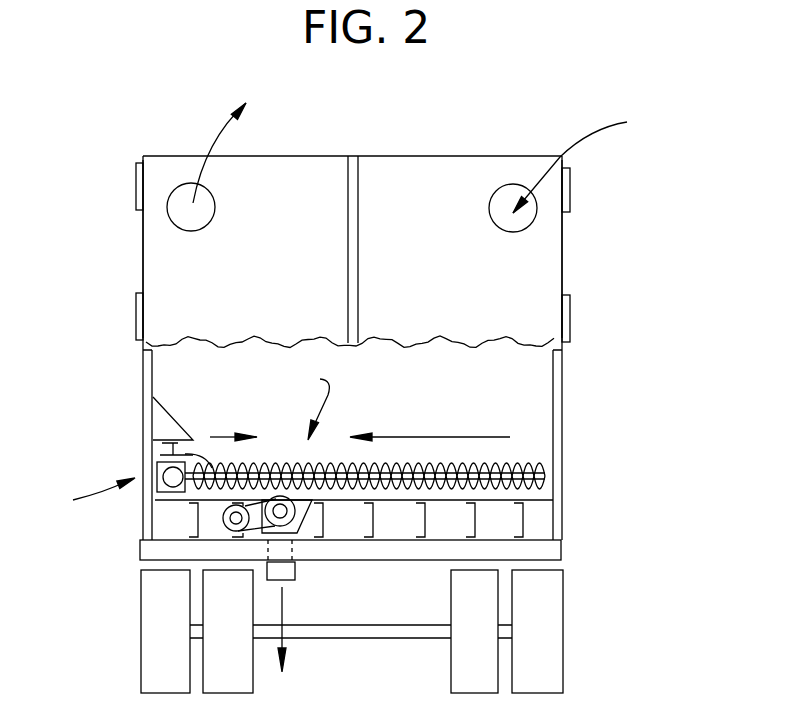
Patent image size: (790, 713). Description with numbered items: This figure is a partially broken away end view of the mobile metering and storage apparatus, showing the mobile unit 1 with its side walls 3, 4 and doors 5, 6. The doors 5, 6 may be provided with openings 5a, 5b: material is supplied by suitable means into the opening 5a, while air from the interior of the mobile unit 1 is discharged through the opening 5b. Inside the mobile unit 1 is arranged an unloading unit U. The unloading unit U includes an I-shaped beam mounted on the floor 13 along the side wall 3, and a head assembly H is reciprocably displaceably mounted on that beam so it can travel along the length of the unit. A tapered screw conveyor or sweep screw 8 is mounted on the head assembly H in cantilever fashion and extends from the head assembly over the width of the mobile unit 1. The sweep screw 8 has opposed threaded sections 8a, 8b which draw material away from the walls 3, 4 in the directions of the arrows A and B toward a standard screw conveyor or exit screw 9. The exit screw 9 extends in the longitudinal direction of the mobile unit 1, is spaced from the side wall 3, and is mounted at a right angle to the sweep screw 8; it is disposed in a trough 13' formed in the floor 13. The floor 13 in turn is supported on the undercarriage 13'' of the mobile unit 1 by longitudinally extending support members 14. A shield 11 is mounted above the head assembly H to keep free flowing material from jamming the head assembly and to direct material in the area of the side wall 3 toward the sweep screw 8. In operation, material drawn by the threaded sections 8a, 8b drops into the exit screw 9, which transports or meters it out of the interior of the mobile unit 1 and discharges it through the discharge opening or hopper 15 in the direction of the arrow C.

The mobile unit 1 is at (388, 138).
The side wall 3 is at (142, 233).
The side wall 4 is at (565, 268).
The door 5 is at (528, 257).
The opening 5a is at (512, 195).
The opening 5b is at (183, 190).
The door 6 is at (162, 268).
The tapered screw conveyor or sweep screw 8 is at (526, 472).
The threaded section 8a is at (160, 458).
The threaded section 8b is at (470, 470).
The screw conveyor or exit screw 9 is at (277, 497).
The shield 11 is at (180, 420).
The floor portion 13 is at (430, 505).
The trough 13' is at (321, 549).
The undercarriage 13'' is at (351, 616).
The support members 14 is at (525, 519).
The discharge opening or hopper 15 is at (296, 573).
The arrow A is at (228, 433).
The arrow B is at (438, 434).
The arrow C is at (288, 632).
The head assembly H is at (95, 497).
The unloading unit U is at (316, 403).